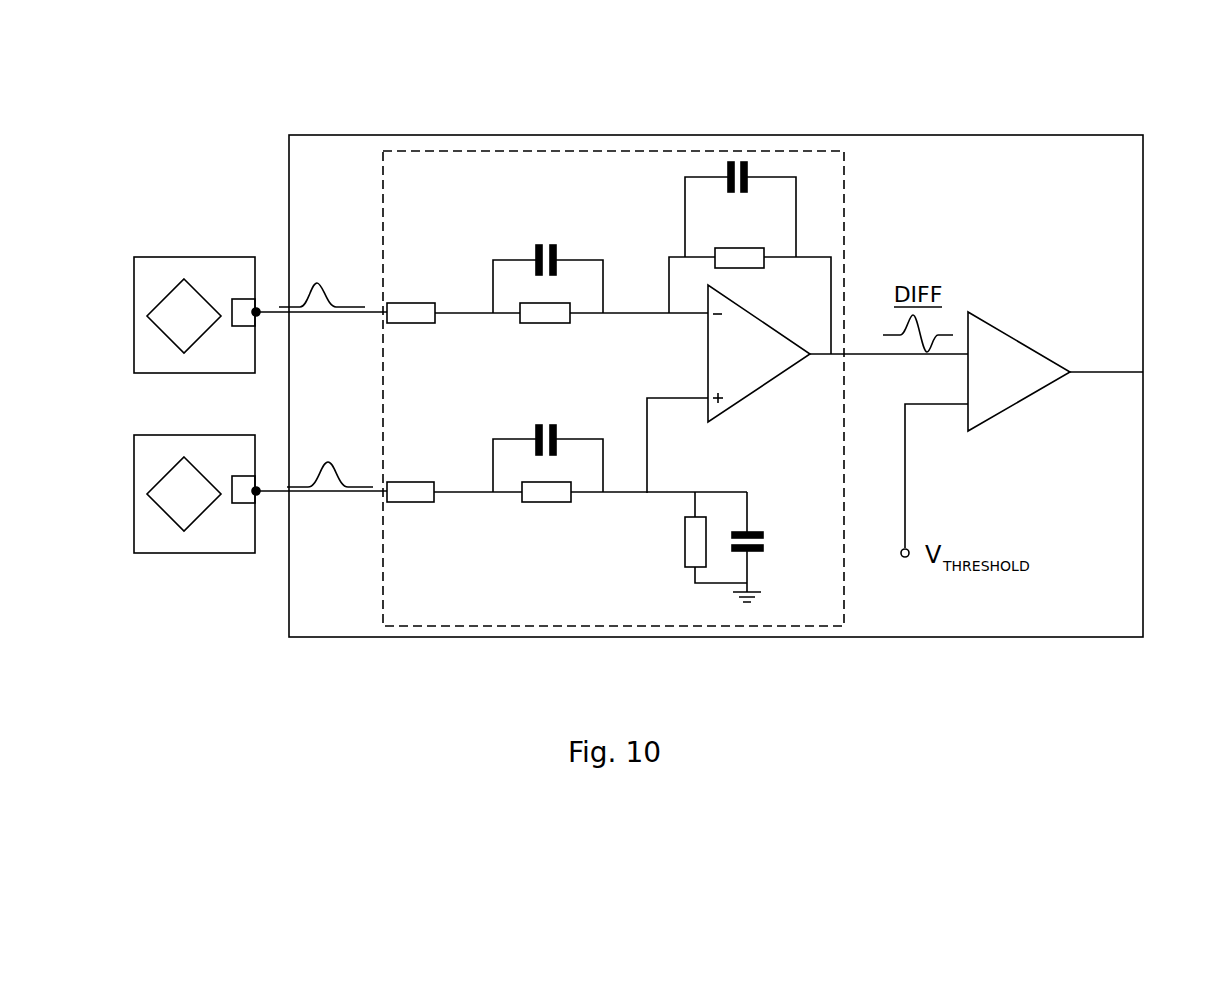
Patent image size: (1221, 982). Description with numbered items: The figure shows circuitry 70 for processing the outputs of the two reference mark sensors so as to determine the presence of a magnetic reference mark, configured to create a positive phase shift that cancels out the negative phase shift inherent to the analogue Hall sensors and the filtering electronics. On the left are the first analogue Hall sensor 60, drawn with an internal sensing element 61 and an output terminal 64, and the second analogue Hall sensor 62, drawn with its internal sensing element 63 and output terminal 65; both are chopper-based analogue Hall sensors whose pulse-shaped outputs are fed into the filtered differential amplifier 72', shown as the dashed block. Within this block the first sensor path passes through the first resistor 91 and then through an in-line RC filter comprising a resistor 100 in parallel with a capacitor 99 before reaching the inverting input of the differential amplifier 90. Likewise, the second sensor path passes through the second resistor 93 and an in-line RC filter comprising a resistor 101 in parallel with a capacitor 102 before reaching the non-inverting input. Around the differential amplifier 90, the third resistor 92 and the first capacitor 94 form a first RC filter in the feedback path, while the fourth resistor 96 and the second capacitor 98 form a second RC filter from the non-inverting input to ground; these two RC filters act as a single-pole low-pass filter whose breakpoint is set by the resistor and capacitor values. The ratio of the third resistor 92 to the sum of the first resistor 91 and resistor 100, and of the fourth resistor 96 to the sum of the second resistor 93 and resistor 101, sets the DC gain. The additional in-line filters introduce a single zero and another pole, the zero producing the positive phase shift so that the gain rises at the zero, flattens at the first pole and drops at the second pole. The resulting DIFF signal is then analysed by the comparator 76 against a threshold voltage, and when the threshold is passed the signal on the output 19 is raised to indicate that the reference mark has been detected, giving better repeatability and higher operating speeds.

The output 19 is at (1153, 380).
The first analogue Hall sensor 60 is at (197, 255).
The first sensor element 61 is at (171, 328).
The second analogue Hall sensor 62 is at (182, 553).
The second sensor element 63 is at (171, 506).
The first sensor output connection 64 is at (243, 297).
The second sensor output connection 65 is at (243, 475).
The circuitry 70 is at (803, 136).
The differential amplifier 72' is at (613, 334).
The comparator 76 is at (987, 385).
The differential amplifier 90 is at (730, 370).
The first resistor 91 is at (412, 303).
The third resistor 92 is at (742, 247).
The second resistor 93 is at (407, 482).
The first capacitor 94 is at (722, 188).
The fourth resistor 96 is at (683, 546).
The second capacitor 98 is at (773, 531).
The capacitor 99 is at (556, 243).
The resistor 100 is at (535, 326).
The resistor 101 is at (540, 504).
The capacitor 102 is at (562, 422).